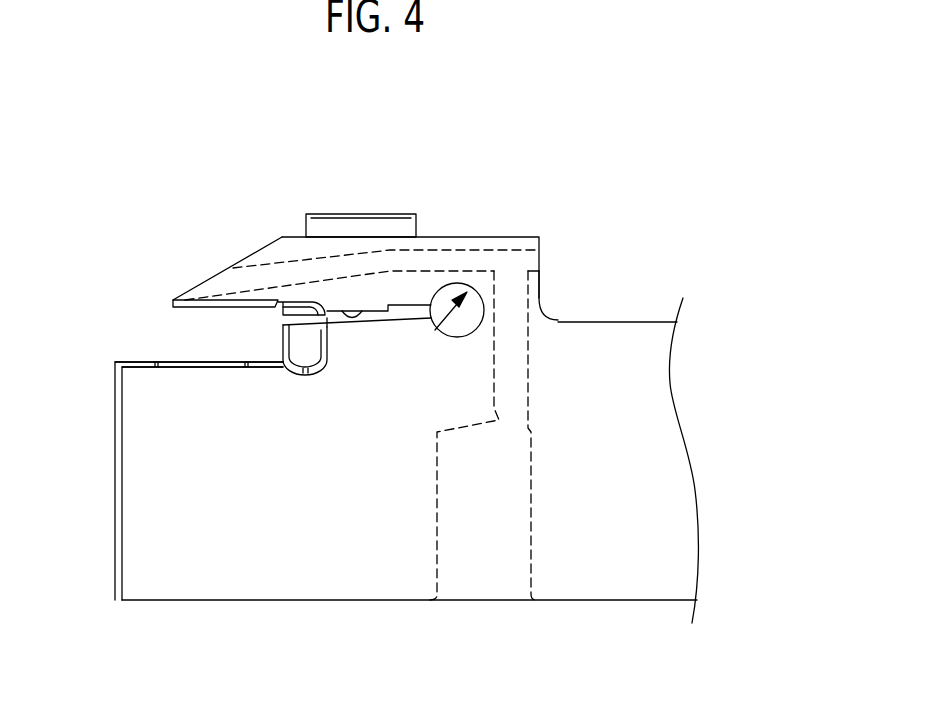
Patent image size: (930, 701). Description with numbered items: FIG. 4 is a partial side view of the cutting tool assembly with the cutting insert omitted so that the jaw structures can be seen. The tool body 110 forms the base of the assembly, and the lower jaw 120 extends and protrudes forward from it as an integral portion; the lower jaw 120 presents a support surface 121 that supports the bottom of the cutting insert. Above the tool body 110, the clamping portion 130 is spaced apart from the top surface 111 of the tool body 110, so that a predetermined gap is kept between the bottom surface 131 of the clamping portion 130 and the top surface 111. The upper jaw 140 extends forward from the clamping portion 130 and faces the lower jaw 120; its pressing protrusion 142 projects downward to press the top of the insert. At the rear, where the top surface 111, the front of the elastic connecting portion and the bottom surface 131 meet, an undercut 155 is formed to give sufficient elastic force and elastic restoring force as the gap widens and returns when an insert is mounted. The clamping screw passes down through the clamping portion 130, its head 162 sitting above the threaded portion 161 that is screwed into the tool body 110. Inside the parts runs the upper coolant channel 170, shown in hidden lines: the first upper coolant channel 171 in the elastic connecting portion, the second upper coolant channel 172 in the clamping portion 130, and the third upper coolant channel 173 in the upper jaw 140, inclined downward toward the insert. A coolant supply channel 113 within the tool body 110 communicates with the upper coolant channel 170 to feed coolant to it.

The tool body 110 is at (620, 335).
The top surface of the tool body 111 is at (342, 321).
The coolant supply channel 113 is at (478, 527).
The lower jaw 120 is at (133, 422).
The support surface 121 is at (175, 363).
The clamping portion 130 is at (502, 243).
The bottom surface of the clamping portion 131 is at (388, 315).
The upper jaw 140 is at (253, 262).
The pressing protrusion 142 is at (182, 306).
The undercut 155 is at (435, 330).
The threaded portion 161 is at (409, 224).
The head 162 is at (322, 224).
The upper coolant channel 170 is at (550, 110).
The first upper coolant channel 171 is at (528, 315).
The second upper coolant channel 172 is at (445, 248).
The third upper coolant channel 173 is at (292, 263).